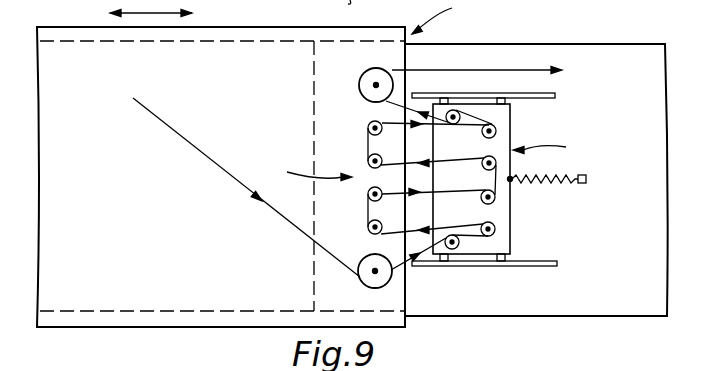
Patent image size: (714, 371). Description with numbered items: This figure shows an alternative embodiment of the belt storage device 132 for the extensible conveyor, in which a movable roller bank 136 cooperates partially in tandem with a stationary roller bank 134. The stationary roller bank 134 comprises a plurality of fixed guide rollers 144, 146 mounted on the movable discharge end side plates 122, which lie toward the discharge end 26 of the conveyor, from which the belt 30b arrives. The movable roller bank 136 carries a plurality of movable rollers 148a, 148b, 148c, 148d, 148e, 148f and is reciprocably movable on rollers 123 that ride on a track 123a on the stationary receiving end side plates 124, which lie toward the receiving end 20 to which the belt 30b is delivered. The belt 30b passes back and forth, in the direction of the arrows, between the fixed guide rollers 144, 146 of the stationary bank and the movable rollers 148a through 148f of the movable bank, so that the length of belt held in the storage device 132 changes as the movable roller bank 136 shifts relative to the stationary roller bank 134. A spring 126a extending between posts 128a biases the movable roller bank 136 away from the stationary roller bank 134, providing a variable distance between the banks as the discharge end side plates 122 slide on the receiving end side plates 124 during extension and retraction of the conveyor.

The receiving end 20 is at (523, 91).
The discharge end 26 is at (222, 176).
The belt 30b is at (222, 171).
The movable discharge end side plates 122 is at (232, 28).
The rollers 123 is at (443, 95).
The track 123a is at (528, 97).
The stationary receiving end side plates 124 is at (545, 44).
The spring 126a is at (582, 175).
The posts 128a is at (511, 182).
The belt storage device 132 is at (453, 18).
The stationary roller bank 134 is at (300, 169).
The movable roller bank 136 is at (520, 179).
The fixed guide rollers 144 is at (371, 69).
The fixed guide rollers 146 is at (368, 147).
The movable roller 148a is at (496, 128).
The movable roller 148b is at (486, 158).
The movable roller 148c is at (484, 192).
The movable roller 148d is at (496, 228).
The movable roller 148e is at (460, 117).
The movable roller 148f is at (459, 242).